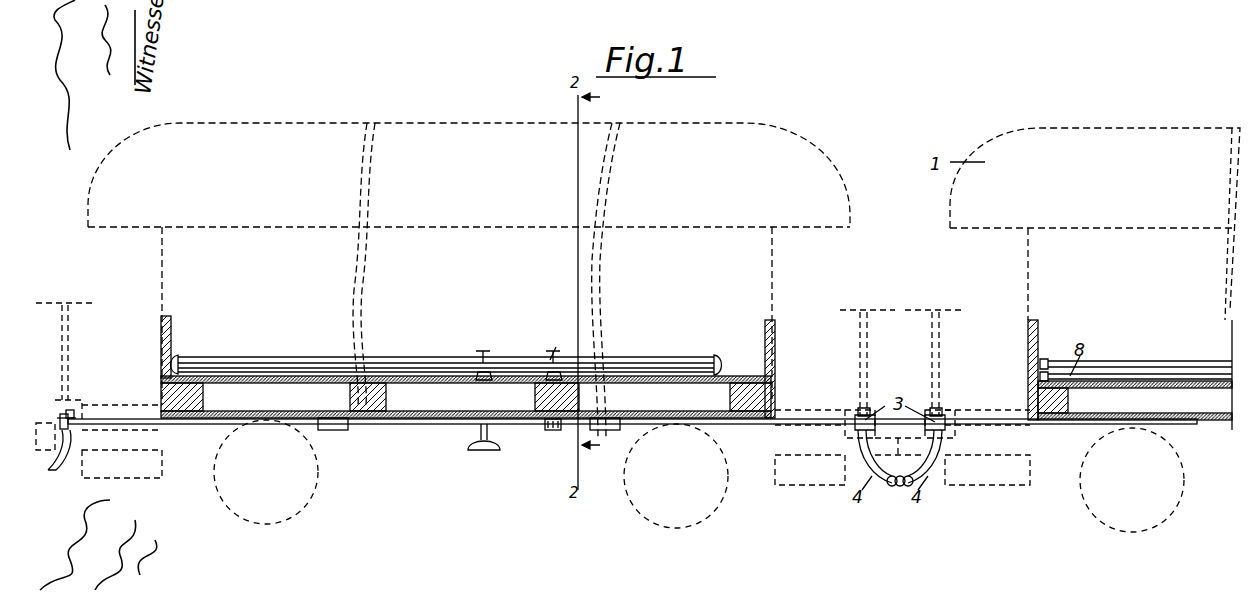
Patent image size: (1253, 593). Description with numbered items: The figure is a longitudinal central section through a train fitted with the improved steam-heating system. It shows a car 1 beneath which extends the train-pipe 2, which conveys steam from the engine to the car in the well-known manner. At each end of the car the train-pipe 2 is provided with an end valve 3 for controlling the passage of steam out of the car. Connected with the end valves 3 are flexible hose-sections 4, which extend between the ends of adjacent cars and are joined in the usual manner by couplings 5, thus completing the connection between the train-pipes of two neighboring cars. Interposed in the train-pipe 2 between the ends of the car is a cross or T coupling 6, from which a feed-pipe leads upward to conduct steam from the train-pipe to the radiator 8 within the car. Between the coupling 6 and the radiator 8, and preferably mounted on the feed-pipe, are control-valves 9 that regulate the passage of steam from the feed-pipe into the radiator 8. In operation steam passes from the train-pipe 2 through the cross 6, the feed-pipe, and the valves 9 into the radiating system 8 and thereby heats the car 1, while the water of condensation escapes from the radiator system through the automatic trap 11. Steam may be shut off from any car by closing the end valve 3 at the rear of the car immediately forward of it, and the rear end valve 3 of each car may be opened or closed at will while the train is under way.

The car 1 is at (790, 157).
The train-pipe 2 is at (410, 424).
The end valve 3 is at (62, 418).
The flexible hose-section 4 is at (62, 468).
The coupling 5 is at (898, 487).
The cross or T coupling 6 is at (549, 431).
The radiator 8 is at (290, 361).
The control-valve 9 is at (556, 370).
The automatic trap 11 is at (484, 448).